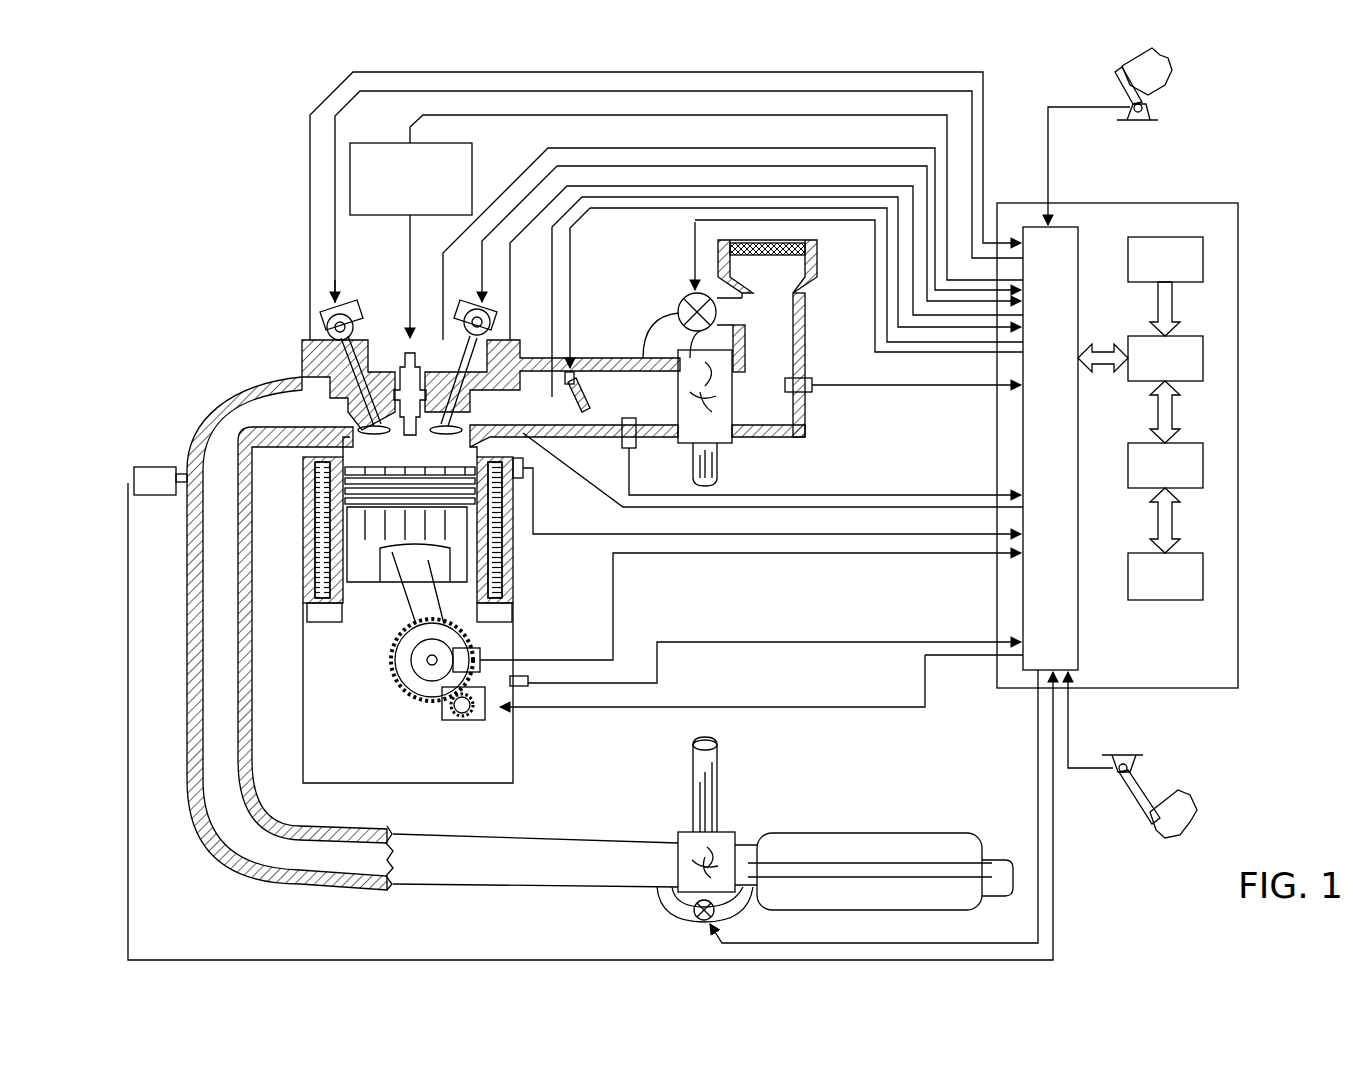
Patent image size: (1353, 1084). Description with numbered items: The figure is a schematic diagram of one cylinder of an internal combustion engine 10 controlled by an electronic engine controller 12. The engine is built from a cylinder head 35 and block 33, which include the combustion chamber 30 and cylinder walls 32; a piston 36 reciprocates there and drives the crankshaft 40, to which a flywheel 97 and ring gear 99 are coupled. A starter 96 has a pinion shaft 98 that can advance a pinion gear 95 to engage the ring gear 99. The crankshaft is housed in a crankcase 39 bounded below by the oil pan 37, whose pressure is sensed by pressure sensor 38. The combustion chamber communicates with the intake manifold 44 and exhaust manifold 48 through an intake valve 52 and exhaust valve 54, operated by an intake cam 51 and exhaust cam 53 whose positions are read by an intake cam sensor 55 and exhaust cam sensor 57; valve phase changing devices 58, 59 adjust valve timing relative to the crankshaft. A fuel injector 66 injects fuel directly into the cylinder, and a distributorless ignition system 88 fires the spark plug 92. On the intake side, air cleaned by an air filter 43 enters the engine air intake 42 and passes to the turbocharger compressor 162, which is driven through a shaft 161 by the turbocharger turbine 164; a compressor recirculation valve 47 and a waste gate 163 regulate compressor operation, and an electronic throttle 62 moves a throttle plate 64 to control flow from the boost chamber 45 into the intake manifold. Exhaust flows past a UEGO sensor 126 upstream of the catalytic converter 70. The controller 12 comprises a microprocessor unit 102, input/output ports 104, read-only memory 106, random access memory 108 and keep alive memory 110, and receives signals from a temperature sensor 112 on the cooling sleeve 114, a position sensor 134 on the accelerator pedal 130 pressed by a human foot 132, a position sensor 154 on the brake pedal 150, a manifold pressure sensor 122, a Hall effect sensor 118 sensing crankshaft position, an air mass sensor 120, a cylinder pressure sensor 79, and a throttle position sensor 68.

The internal combustion engine 10 is at (236, 292).
The electronic engine controller 12 is at (1238, 205).
The combustion chamber 30 is at (328, 552).
The cylinder walls 32 is at (343, 605).
The block 33 is at (300, 492).
The cylinder head 35 is at (298, 338).
The piston 36 is at (400, 585).
The oil pan 37 is at (515, 765).
The pressure sensor 38 is at (530, 682).
The crankcase 39 is at (322, 702).
The crankshaft 40 is at (412, 685).
The engine air intake 42 is at (637, 263).
The air filter 43 is at (780, 257).
The intake manifold 44 is at (547, 411).
The boost chamber 45 is at (649, 410).
The compressor recirculation valve 47 is at (687, 297).
The exhaust manifold 48 is at (283, 416).
The intake cam 51 is at (482, 305).
The intake valve 52 is at (455, 408).
The exhaust cam 53 is at (342, 305).
The exhaust valve 54 is at (320, 395).
The intake cam sensor 55 is at (498, 340).
The exhaust cam sensor 57 is at (326, 325).
The valve phase changing device 58 is at (353, 340).
The valve phase changing device 59 is at (488, 318).
The electronic throttle 62 is at (583, 400).
The throttle plate 64 is at (586, 411).
The fuel injector 66 is at (526, 448).
The throttle position sensor 68 is at (560, 378).
The catalytic converter 70 is at (800, 833).
The cylinder pressure sensor 79 is at (413, 350).
The distributorless ignition system 88 is at (360, 143).
The spark plug 92 is at (405, 358).
The pinion gear 95 is at (462, 718).
The starter 96 is at (475, 722).
The flywheel 97 is at (402, 663).
The pinion shaft 98 is at (455, 718).
The ring gear 99 is at (428, 702).
The microprocessor unit 102 is at (1203, 360).
The input/output ports 104 is at (1078, 235).
The read-only memory 106 is at (1203, 262).
The random access memory 108 is at (1203, 468).
The keep alive memory 110 is at (1203, 578).
The temperature sensor 112 is at (536, 472).
The cooling sleeve 114 is at (497, 553).
The Hall effect sensor 118 is at (480, 650).
The air mass sensor 120 is at (808, 378).
The pressure sensor 122 is at (622, 444).
The Universal Exhaust Gas Oxygen sensor 126 is at (134, 467).
The accelerator pedal 130 is at (1118, 86).
The human foot 132 is at (1170, 66).
The position sensor 134 is at (1143, 107).
The brake pedal 150 is at (1150, 815).
The position sensor 154 is at (1112, 762).
The shaft 161 is at (693, 465).
The turbocharger compressor 162 is at (716, 432).
The waste gate 163 is at (695, 920).
The turbocharger turbine 164 is at (680, 832).